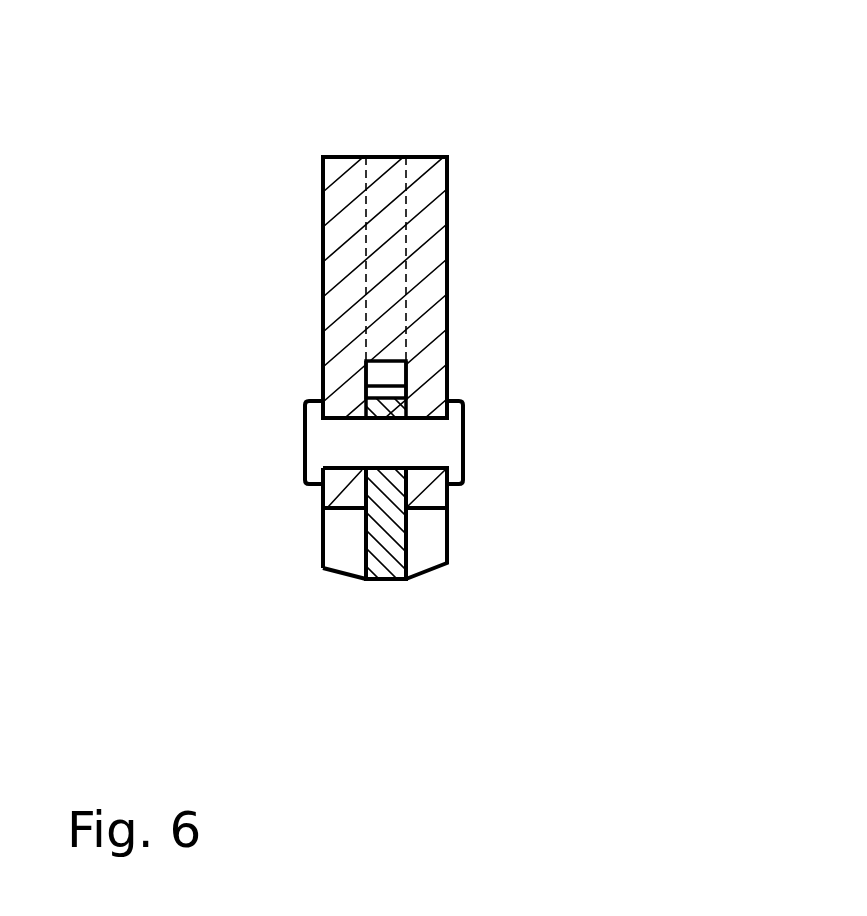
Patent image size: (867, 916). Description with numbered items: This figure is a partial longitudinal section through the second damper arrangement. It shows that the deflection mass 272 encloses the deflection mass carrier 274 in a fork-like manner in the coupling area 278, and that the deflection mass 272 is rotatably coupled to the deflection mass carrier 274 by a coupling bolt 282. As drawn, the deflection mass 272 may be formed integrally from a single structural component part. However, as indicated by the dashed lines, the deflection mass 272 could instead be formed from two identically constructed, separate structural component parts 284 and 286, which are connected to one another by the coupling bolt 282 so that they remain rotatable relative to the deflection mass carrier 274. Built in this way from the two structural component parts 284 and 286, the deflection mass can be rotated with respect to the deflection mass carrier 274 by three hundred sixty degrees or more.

The deflection mass 272 is at (478, 253).
The deflection mass carrier 274 is at (388, 558).
The coupling area 278 is at (265, 436).
The coupling bolt 282 is at (423, 444).
The structural component part 284 is at (346, 192).
The structural component part 286 is at (422, 188).